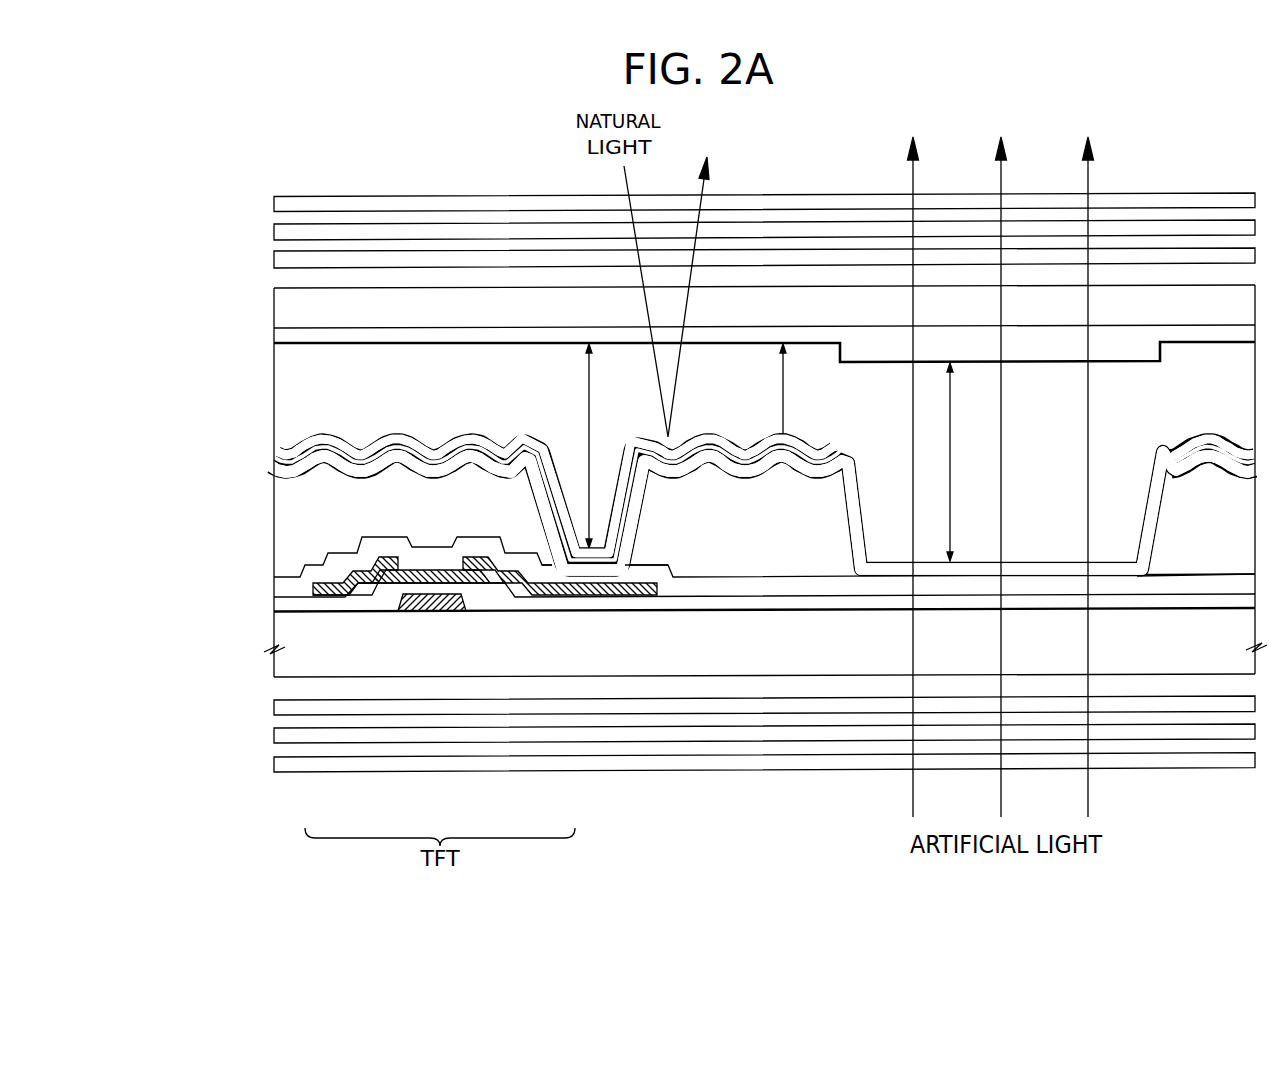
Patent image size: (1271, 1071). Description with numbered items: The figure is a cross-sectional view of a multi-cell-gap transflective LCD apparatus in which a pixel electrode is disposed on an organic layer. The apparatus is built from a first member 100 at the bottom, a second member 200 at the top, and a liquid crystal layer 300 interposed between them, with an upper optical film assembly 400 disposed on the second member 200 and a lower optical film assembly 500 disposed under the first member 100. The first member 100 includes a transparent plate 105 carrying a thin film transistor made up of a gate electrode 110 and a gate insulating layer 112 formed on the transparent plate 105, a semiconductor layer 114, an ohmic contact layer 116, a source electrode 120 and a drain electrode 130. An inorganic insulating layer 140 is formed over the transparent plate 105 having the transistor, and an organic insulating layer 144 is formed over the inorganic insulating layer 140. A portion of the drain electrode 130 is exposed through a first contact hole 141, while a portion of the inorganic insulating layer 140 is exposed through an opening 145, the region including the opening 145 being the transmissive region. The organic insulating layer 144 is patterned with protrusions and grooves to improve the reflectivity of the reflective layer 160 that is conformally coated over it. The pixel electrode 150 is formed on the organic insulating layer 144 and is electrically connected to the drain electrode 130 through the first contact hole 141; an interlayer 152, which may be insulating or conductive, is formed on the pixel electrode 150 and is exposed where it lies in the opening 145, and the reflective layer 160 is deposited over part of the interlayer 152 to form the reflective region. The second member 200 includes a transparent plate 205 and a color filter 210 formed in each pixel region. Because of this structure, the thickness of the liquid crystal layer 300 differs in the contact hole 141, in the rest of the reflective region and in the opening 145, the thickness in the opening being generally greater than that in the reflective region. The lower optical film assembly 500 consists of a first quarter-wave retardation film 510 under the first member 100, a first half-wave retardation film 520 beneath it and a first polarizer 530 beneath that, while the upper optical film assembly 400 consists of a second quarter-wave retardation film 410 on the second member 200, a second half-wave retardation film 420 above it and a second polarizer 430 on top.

The first member 100 is at (188, 425).
The transparent plate 105 is at (278, 633).
The gate electrode 110 is at (429, 606).
The gate insulating layer 112 is at (490, 600).
The semiconductor layer 114 is at (371, 596).
The ohmic contact layer 116 is at (353, 588).
The source electrode 120 is at (322, 588).
The drain electrode 130 is at (538, 597).
The inorganic insulating layer 140 is at (277, 591).
The first contact hole 141 is at (610, 475).
The organic insulating layer 144 is at (283, 527).
The opening 145 is at (1120, 475).
The pixel electrode 150 is at (274, 461).
The interlayer 152 is at (274, 449).
The reflective layer 160 is at (274, 438).
The second member 200 is at (188, 298).
The transparent plate 205 is at (274, 306).
The color filter 210 is at (274, 336).
The liquid crystal layer 300 is at (285, 378).
The upper optical film assembly 400 is at (188, 200).
The second λ/4 retardation film 410 is at (274, 258).
The second λ/2 retardation film 420 is at (274, 231).
The second polarizer 430 is at (274, 201).
The lower optical film assembly 500 is at (188, 700).
The first λ/4 retardation film 510 is at (274, 705).
The first λ/2 retardation film 520 is at (274, 735).
The first polarizer 530 is at (274, 764).